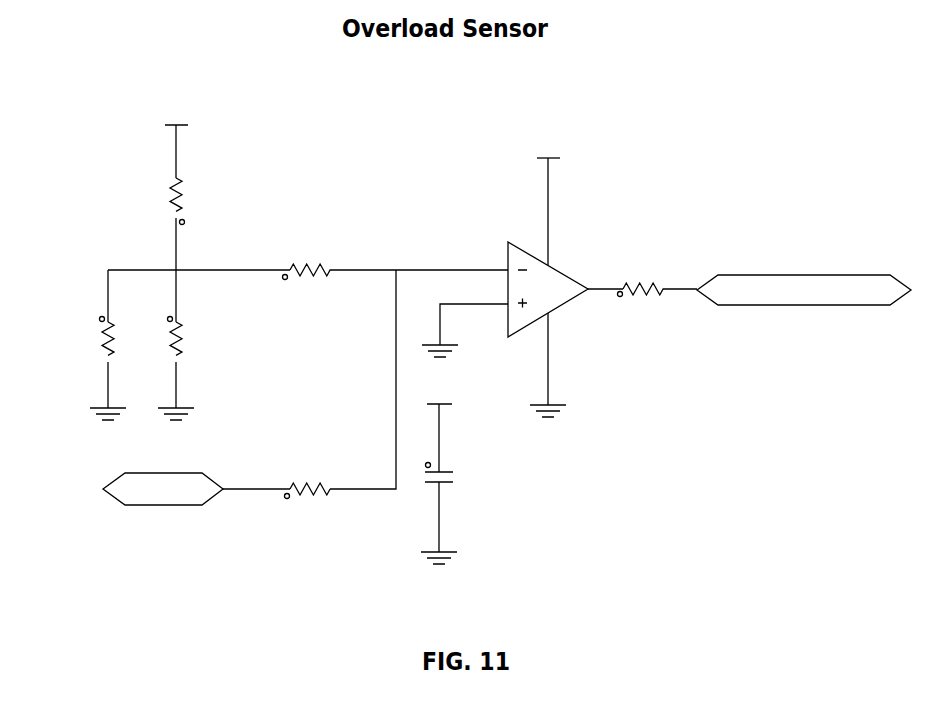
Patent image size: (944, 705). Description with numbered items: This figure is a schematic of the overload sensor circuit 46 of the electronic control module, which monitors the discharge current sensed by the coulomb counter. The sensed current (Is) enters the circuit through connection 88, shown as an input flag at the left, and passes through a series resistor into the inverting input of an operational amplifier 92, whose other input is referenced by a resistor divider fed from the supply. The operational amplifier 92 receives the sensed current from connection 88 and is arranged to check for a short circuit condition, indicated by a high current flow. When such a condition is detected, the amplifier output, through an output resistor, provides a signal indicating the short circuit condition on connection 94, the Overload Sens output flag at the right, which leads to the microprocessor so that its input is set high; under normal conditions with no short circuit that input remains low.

The overload sensor circuit 46 is at (110, 60).
The connection 88 is at (162, 506).
The operational amplifier 92 is at (520, 334).
The connection 94 is at (858, 307).